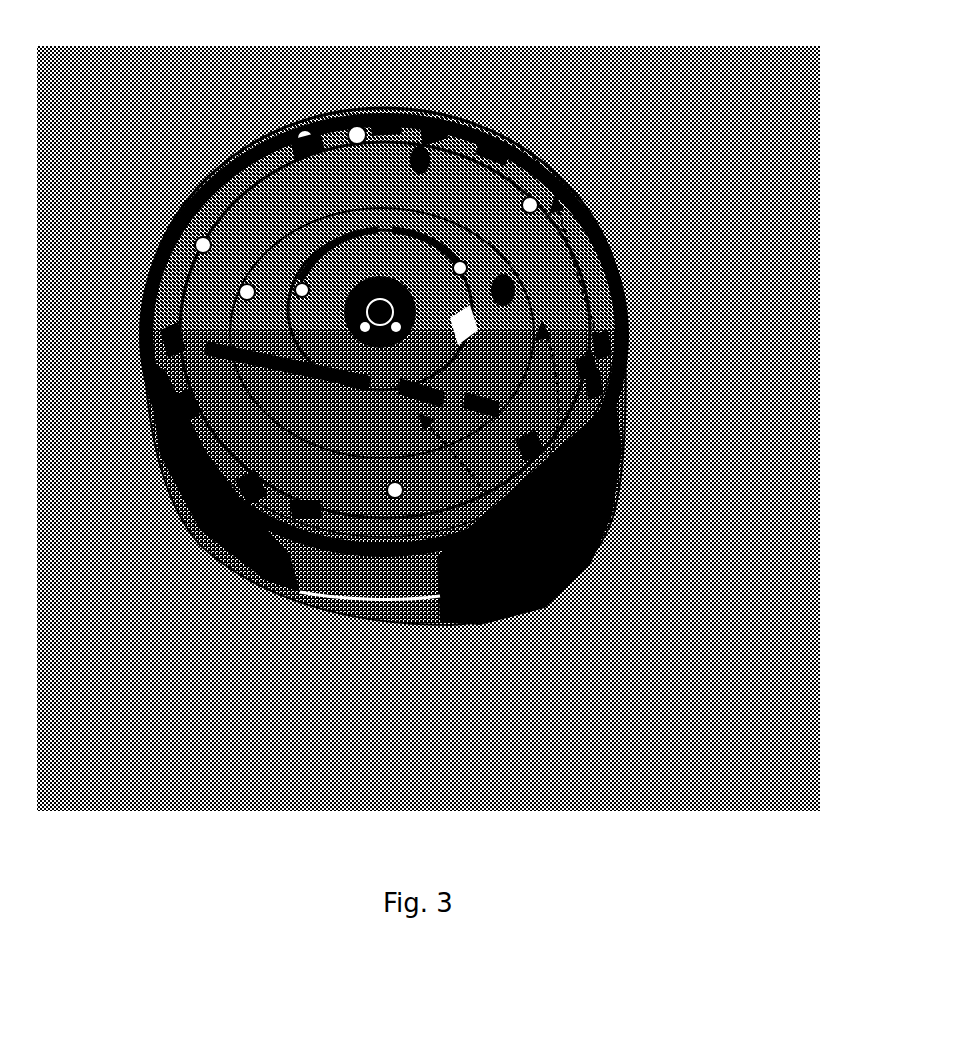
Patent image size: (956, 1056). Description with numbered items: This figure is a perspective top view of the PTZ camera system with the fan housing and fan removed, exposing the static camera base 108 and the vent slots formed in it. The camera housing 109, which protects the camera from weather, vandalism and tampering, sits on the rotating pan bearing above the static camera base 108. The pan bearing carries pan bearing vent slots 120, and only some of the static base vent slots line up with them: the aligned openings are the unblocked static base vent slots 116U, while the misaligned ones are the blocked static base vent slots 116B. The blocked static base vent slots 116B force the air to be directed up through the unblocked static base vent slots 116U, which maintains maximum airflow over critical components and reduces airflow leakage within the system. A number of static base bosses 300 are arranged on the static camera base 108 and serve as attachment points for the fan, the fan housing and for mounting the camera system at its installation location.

The static camera base 108 is at (590, 215).
The camera housing 109 is at (555, 587).
The blocked static base vent slots 116B is at (379, 130).
The unblocked static base vent slots 116U is at (590, 372).
The pan bearing vent slots 120 is at (600, 347).
The static base bosses 300 is at (298, 140).